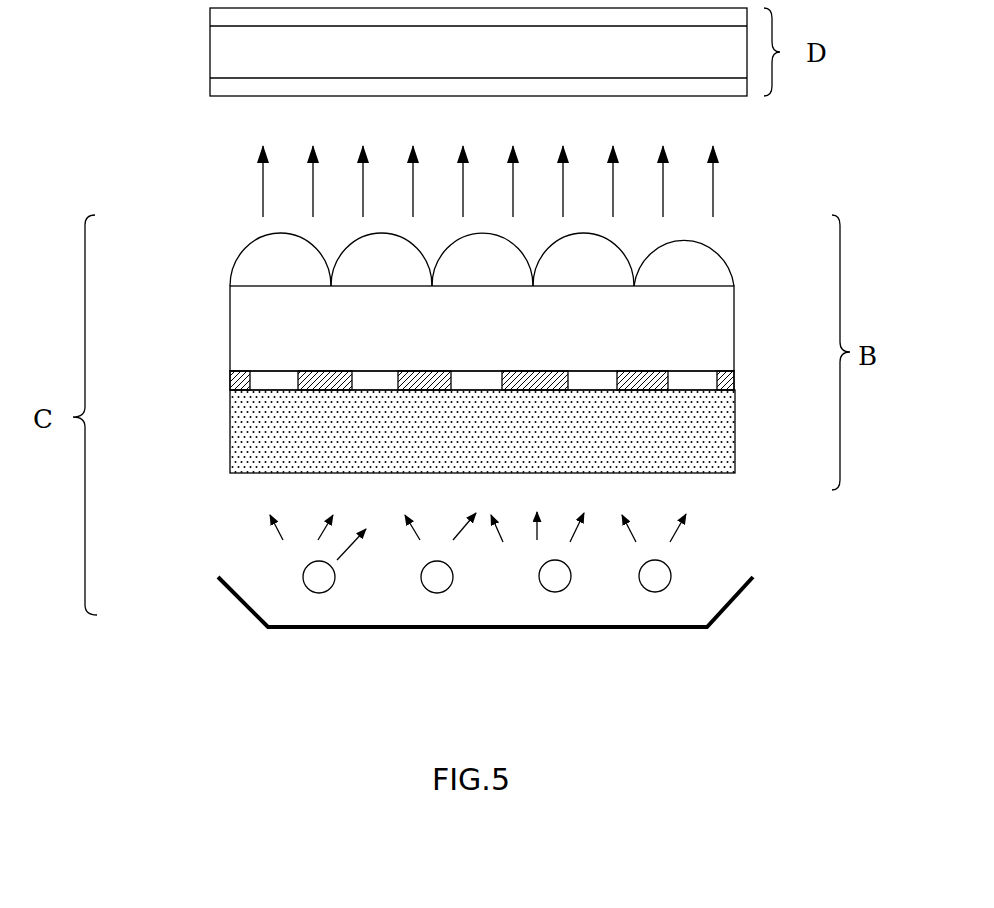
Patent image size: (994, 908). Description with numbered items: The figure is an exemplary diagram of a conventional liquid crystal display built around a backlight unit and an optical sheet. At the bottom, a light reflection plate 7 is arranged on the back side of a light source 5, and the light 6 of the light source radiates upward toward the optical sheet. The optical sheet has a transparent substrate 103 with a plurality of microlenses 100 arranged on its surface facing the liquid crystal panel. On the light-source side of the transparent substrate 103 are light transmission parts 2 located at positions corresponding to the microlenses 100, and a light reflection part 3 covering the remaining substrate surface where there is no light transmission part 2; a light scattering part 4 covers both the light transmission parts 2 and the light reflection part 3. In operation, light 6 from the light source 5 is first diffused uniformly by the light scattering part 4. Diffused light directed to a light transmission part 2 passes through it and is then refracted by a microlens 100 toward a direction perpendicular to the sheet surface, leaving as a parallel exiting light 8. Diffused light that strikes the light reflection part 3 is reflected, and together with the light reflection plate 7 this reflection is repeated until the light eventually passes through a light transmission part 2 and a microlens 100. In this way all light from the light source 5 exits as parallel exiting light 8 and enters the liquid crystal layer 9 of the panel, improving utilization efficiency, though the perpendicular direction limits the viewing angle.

The light transmission part 2 is at (476, 359).
The light reflection part 3 is at (657, 371).
The light scattering part 4 is at (718, 421).
The light source 5 is at (556, 592).
The light of a light source 6 is at (700, 523).
The light reflection plate 7 is at (233, 593).
The exiting light 8 is at (263, 182).
The liquid crystal layer 9 is at (228, 61).
The microlens 100 is at (700, 267).
The transparent substrate 103 is at (477, 299).